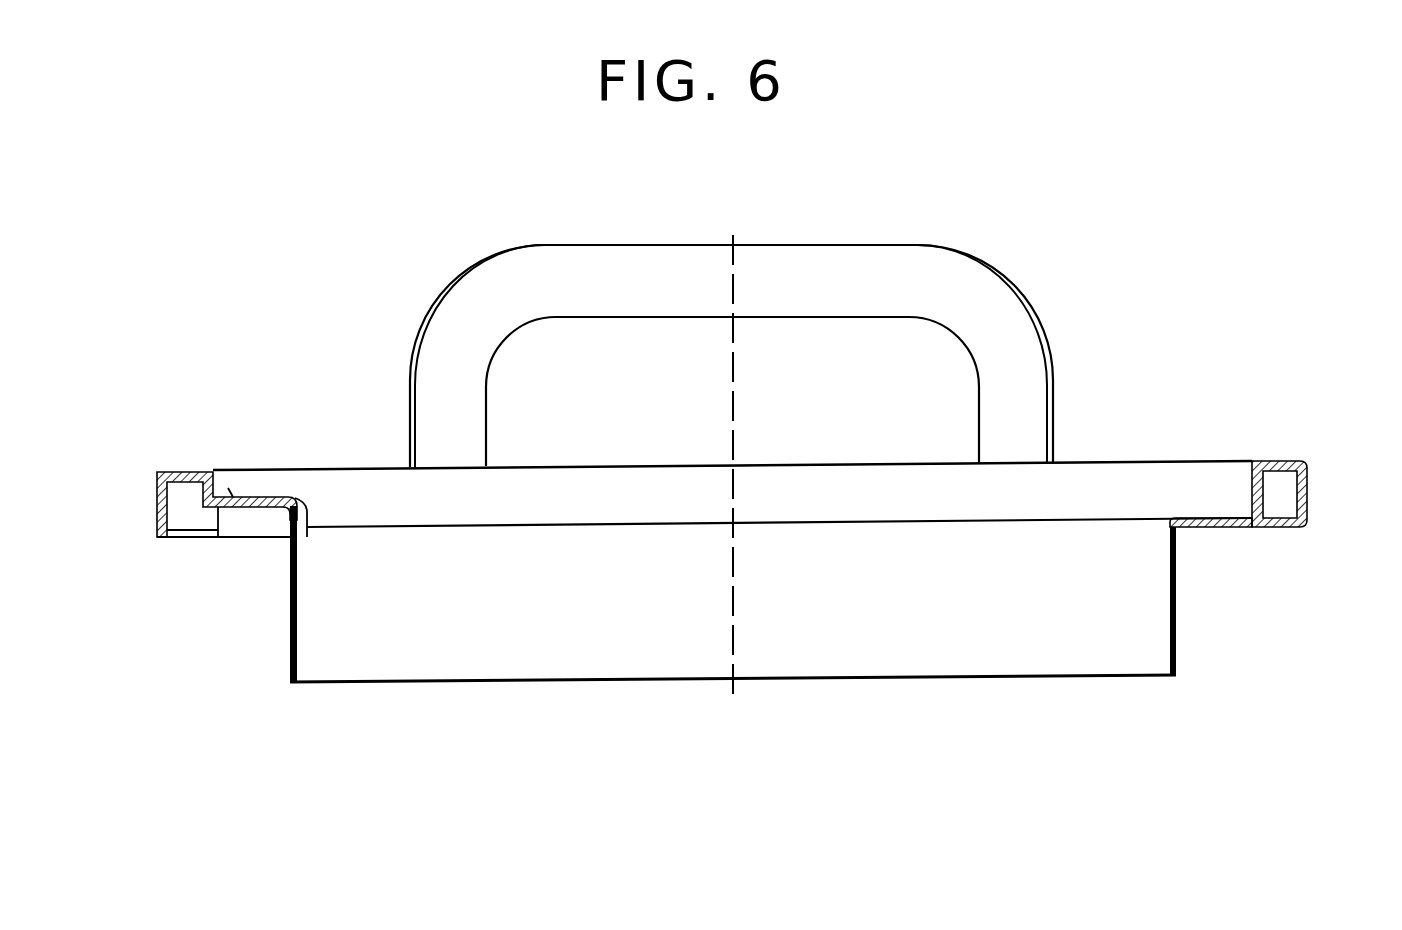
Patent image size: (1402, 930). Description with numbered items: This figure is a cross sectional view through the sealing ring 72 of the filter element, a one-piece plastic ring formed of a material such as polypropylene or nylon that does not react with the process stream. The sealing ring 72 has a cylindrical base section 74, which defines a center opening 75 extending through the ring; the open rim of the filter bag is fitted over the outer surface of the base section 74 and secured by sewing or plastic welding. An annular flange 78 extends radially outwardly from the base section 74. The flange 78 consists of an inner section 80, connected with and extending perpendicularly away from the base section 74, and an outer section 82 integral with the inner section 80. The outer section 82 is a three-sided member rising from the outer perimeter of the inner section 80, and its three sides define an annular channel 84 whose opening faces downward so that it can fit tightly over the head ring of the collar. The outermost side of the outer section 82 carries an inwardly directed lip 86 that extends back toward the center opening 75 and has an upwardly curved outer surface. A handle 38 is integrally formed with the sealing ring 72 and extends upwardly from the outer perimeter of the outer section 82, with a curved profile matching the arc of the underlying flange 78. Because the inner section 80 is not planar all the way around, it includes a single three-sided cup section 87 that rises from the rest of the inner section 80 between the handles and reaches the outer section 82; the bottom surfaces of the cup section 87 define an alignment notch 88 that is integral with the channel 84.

The handles 38 is at (847, 268).
The sealing ring 72 is at (1061, 259).
The base section 74 is at (958, 617).
The center opening 75 is at (937, 652).
The annular flange 78 is at (1118, 462).
The inner section 80 is at (1213, 528).
The outer section 82 is at (958, 509).
The annular channel 84 is at (1273, 505).
The inwardly directed lip 86 is at (173, 540).
The cup section 87 is at (305, 512).
The alignment notch 88 is at (255, 527).